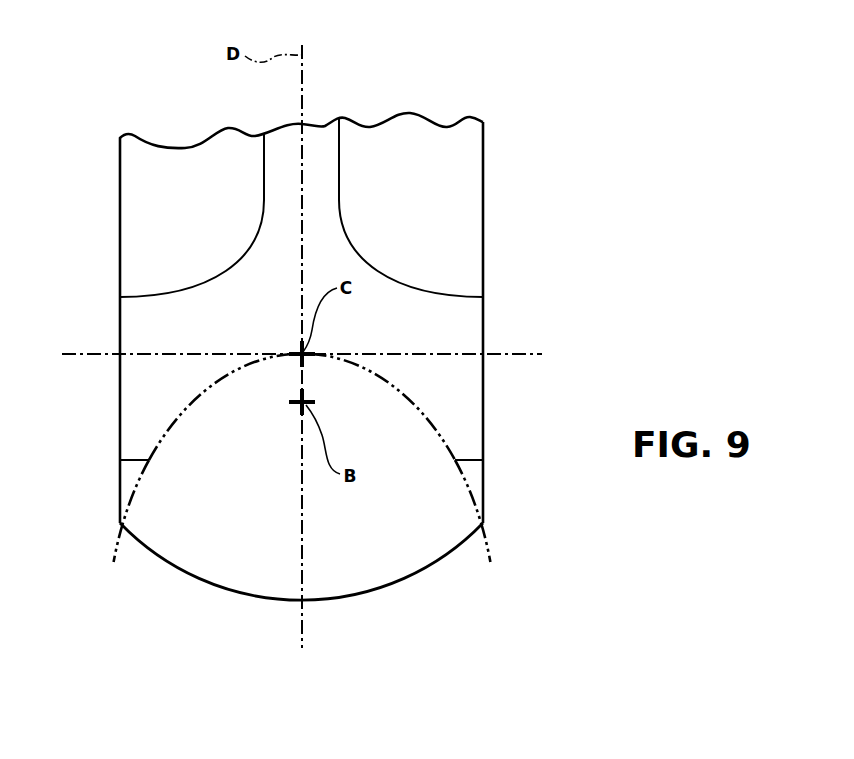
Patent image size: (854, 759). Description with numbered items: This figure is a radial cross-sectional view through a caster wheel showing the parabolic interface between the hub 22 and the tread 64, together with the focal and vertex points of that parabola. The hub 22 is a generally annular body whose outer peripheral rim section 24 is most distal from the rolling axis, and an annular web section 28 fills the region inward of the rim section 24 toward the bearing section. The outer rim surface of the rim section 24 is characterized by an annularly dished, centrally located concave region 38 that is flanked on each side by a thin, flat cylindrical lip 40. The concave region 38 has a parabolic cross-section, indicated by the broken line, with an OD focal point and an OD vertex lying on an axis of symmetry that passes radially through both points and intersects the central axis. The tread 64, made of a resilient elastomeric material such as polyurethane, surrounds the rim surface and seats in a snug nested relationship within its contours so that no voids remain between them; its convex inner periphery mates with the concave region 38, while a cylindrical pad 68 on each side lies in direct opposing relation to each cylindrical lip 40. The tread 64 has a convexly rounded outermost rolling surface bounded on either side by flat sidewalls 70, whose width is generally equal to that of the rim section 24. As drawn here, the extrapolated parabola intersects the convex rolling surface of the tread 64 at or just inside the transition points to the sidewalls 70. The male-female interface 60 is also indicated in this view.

The hub 22 is at (487, 117).
The rim section 24 is at (483, 316).
The web section 28 is at (339, 147).
The concave region 38 is at (211, 386).
The cylindrical lip 40 is at (132, 461).
The male-female interface 60 is at (223, 373).
The tread 64 is at (392, 587).
The cylindrical pad 68 is at (130, 459).
The sidewall 70 is at (120, 508).